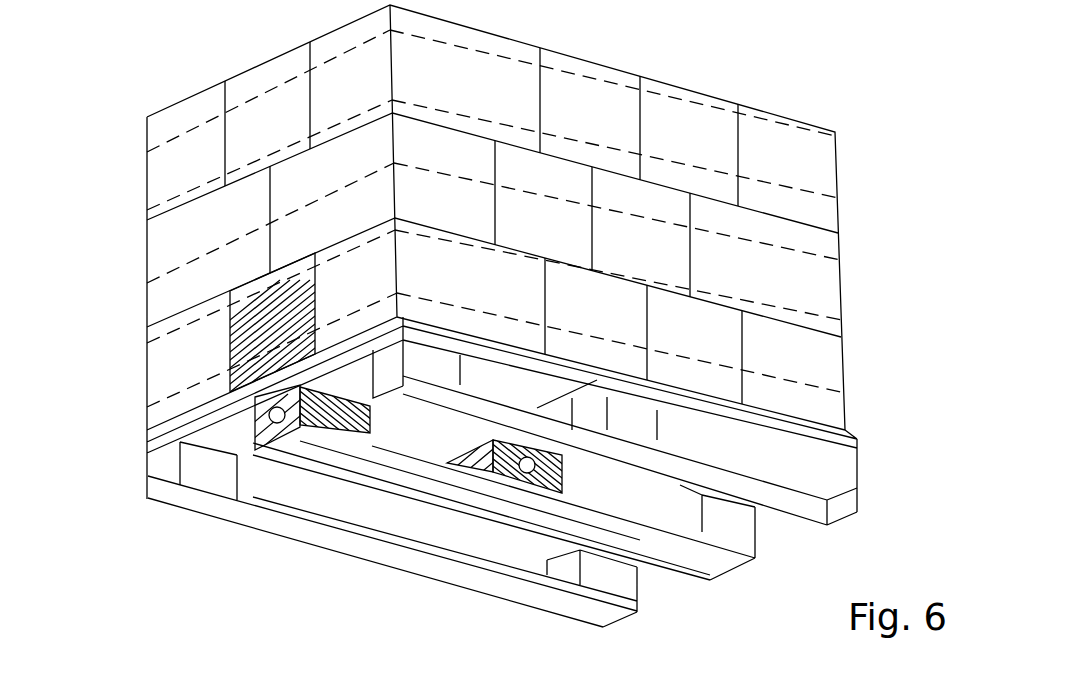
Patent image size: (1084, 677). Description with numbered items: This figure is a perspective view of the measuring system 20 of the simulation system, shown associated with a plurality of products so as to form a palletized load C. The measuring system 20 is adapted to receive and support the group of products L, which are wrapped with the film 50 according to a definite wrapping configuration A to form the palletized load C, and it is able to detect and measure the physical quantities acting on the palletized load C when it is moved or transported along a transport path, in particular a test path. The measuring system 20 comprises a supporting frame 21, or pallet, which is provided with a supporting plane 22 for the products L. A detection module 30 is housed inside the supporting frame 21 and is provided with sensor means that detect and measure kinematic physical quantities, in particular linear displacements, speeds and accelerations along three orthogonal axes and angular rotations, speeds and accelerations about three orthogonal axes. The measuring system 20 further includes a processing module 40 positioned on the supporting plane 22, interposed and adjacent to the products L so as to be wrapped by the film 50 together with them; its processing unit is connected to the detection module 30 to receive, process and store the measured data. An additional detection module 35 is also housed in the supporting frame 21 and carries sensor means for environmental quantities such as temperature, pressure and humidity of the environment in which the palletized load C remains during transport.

The wrapping configuration A is at (502, 338).
The palletized load C is at (497, 217).
The group of products L is at (190, 232).
The film 50 is at (770, 246).
The processing module 40 is at (262, 316).
The supporting plane 22 is at (182, 412).
The additional detection module 35 is at (245, 436).
The measuring system 20 is at (452, 497).
The supporting frame 21 is at (363, 547).
The detection module 30 is at (553, 477).